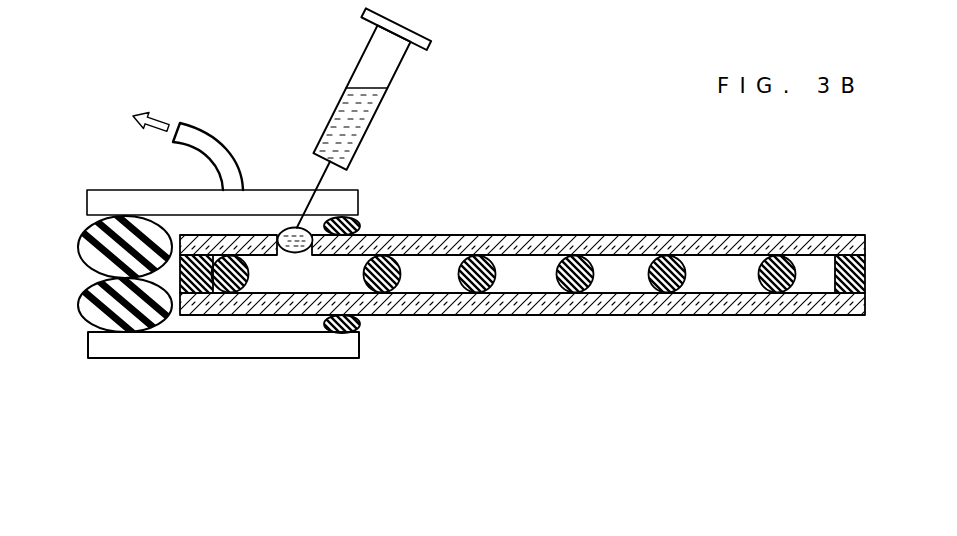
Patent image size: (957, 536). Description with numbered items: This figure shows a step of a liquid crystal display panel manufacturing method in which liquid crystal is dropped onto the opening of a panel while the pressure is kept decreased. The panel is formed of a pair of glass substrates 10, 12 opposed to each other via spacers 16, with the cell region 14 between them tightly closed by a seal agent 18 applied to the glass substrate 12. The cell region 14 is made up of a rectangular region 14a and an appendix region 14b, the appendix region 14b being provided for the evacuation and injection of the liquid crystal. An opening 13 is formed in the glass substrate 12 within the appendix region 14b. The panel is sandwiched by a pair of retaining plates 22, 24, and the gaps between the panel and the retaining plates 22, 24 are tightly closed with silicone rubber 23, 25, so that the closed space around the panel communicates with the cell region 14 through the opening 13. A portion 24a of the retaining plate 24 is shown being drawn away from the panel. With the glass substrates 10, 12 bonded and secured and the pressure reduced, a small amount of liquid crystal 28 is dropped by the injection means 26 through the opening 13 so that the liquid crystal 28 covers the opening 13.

The glass substrate 10 is at (850, 303).
The glass substrate 12 is at (850, 240).
The opening 13 is at (292, 228).
The cell region 14 is at (348, 414).
The rectangular region 14a is at (520, 277).
The appendix region 14b is at (288, 272).
The spacers 16 is at (754, 298).
The seal agent 18 is at (200, 297).
The retaining plate 22 is at (122, 348).
The silicone rubber 23 is at (80, 308).
The retaining plate 24 is at (110, 190).
The peeled film portion 24a is at (210, 132).
The silicone rubber 25 is at (80, 246).
The injection means 26 is at (356, 65).
The liquid crystal 28 is at (299, 231).